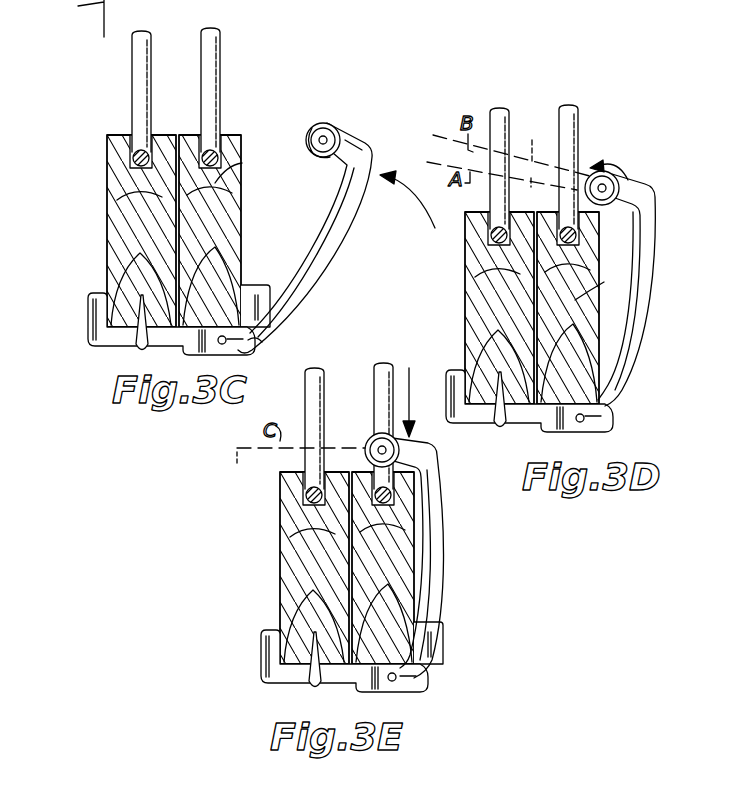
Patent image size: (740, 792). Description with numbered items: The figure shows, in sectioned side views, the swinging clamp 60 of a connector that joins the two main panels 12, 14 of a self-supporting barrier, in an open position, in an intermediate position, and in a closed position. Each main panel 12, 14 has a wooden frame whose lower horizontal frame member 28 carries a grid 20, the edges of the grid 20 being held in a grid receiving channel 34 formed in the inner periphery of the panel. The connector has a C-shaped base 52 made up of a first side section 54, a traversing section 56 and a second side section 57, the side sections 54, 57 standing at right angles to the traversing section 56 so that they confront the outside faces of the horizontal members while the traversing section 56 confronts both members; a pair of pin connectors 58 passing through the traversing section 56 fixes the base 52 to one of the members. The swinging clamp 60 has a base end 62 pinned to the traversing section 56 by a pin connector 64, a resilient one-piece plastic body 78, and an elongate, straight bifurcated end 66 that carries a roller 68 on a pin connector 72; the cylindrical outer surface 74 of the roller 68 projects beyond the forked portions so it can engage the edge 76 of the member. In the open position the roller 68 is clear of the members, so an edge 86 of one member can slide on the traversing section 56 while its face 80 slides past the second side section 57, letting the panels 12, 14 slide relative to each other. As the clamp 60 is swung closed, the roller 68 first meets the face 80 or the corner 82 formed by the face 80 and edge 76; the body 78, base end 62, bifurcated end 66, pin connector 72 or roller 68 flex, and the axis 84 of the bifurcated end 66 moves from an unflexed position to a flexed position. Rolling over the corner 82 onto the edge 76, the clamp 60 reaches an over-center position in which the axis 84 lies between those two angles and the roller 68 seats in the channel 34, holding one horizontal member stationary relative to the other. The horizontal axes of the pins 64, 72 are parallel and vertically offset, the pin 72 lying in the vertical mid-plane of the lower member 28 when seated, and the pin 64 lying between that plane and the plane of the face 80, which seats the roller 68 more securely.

In FIG. 3E, the main panel 12 is at (414, 558).
In FIG. 3E, the main panel 14 is at (288, 568).
In FIG. 3C, the grid 20 is at (112, 91).
In FIG. 3D, the grid 20 is at (597, 166).
In FIG. 3C, the lower horizontal frame member 28 is at (111, 231).
In FIG. 3C, the grid receiving channel 34 is at (109, 136).
In FIG. 3C, the base 52 is at (137, 359).
In FIG. 3C, the first side section 54 is at (144, 314).
In FIG. 3E, the traversing section 56 is at (280, 672).
In FIG. 3C, the second side section 57 is at (262, 281).
In FIG. 3E, the second side section 57 is at (460, 640).
In FIG. 3D, the pin connector 58 is at (487, 424).
In FIG. 3C, the swinging clamp 60 is at (342, 248).
In FIG. 3C, the base end 62 is at (262, 352).
In FIG. 3E, the pin connector 64 is at (423, 691).
In FIG. 3C, the bifurcated end 66 is at (366, 150).
In FIG. 3C, the roller 68 is at (312, 125).
In FIG. 3C, the pin connector 72 is at (329, 133).
In FIG. 3E, the pin connector 72 is at (367, 450).
In FIG. 3C, the cylindrical outer surface 74 is at (312, 152).
In FIG. 3C, the edge 76 is at (229, 90).
In FIG. 3D, the body 78 is at (656, 290).
In FIG. 3C, the face 80 is at (236, 169).
In FIG. 3D, the face 80 is at (604, 282).
In FIG. 3C, the corner 82 is at (227, 212).
In FIG. 3D, the axis 84 is at (516, 165).
In FIG. 3E, the axis 84 is at (293, 470).
In FIG. 3C, the edge 86 is at (158, 339).